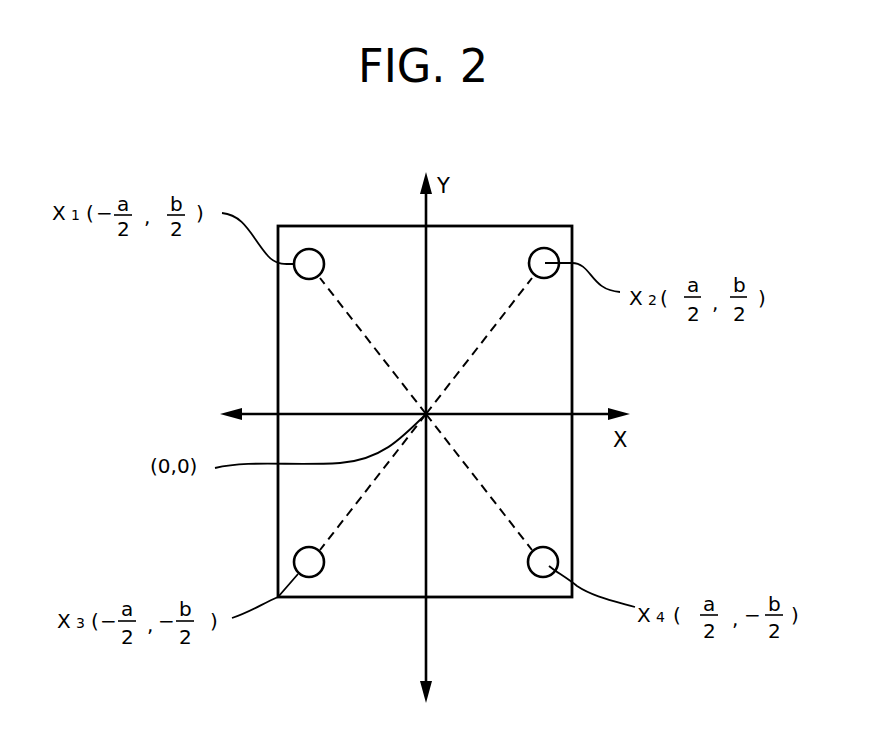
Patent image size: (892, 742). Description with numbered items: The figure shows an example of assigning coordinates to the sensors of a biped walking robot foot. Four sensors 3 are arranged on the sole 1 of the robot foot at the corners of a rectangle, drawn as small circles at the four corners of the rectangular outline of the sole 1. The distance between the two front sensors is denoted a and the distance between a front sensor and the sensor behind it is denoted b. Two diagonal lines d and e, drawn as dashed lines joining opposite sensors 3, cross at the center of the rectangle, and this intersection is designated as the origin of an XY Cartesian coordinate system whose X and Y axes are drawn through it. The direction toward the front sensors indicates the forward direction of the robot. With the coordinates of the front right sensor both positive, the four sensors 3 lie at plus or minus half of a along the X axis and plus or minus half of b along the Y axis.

The sole 1 is at (575, 506).
The sensors 3 is at (300, 252).
The diagonal line d is at (483, 341).
The diagonal line e is at (352, 320).